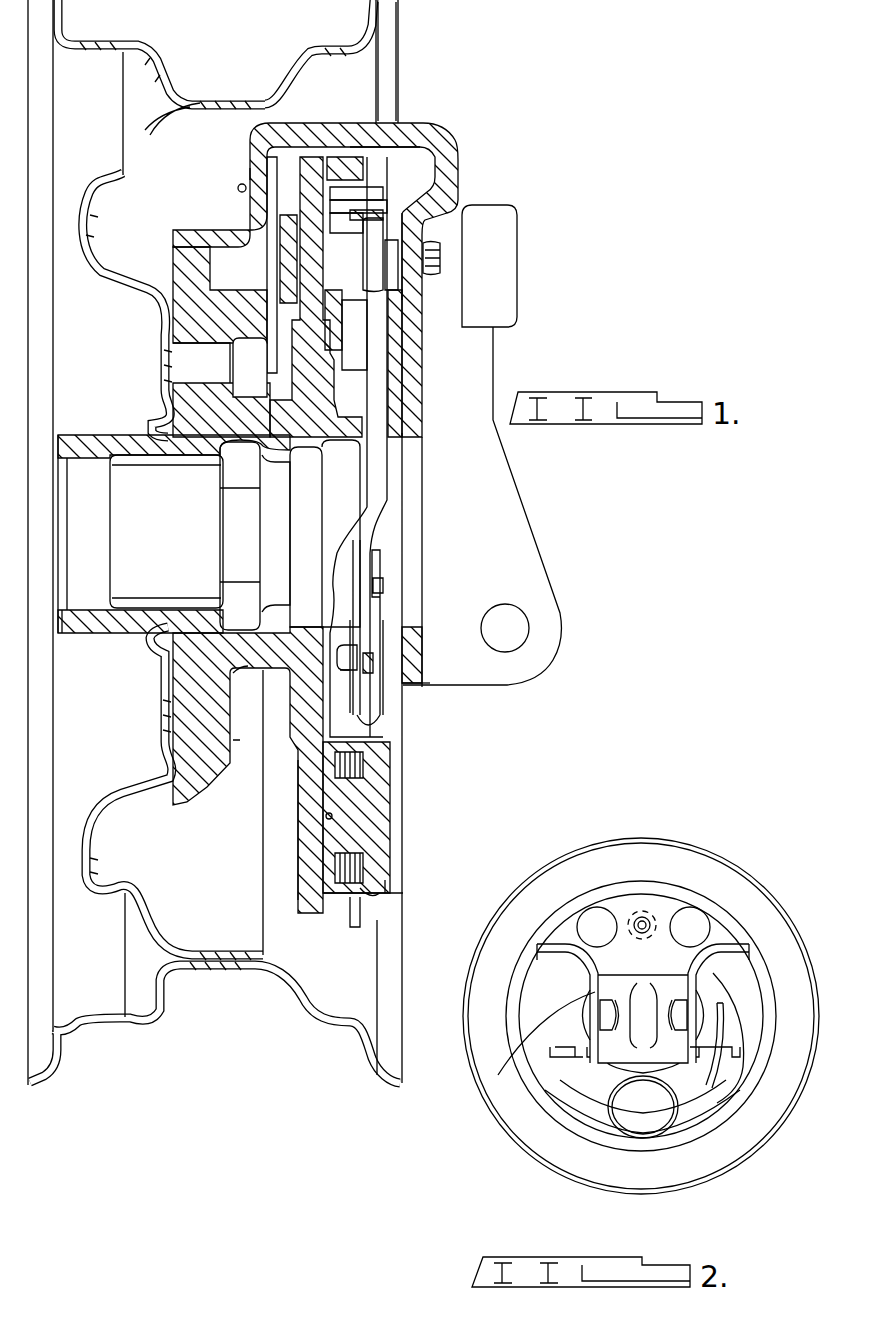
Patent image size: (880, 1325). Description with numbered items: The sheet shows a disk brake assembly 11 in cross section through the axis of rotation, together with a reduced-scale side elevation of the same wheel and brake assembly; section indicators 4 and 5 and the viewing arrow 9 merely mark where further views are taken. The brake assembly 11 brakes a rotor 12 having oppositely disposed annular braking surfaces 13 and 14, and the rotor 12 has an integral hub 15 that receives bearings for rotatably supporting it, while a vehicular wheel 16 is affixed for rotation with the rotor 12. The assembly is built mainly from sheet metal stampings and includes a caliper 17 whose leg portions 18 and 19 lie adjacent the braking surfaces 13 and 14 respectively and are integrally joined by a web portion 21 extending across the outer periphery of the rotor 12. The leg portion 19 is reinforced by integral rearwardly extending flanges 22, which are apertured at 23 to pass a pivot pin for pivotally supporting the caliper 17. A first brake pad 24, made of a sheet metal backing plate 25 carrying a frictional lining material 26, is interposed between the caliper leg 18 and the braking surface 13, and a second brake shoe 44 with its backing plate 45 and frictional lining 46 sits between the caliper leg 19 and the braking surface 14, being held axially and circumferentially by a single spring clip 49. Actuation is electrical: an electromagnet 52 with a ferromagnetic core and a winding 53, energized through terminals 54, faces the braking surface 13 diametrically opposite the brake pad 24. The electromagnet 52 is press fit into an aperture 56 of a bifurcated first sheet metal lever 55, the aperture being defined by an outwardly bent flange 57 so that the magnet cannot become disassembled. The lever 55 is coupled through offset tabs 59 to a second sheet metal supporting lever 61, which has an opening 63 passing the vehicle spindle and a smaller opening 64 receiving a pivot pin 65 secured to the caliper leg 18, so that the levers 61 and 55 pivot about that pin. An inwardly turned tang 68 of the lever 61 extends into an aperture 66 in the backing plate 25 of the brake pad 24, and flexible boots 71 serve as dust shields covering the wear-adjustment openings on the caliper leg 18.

In FIG. 2, the section line 4- 4 is at (603, 947).
In FIG. 1, the section line 5 is at (357, 112).
In FIG. 1, the direction arrow 9 is at (546, 272).
In FIG. 1, the disk brake assembly 11 is at (478, 140).
In FIG. 2, the disk brake assembly 11 is at (732, 855).
In FIG. 1, the rotor 12 is at (300, 852).
In FIG. 1, the braking surface 13 is at (326, 816).
In FIG. 1, the braking surface 14 is at (300, 790).
In FIG. 1, the hub 15 is at (188, 660).
In FIG. 1, the vehicular wheel 16 is at (108, 268).
In FIG. 2, the vehicular wheel 16 is at (665, 860).
In FIG. 1, the caliper 17 is at (440, 122).
In FIG. 1, the leg portion 18 is at (440, 248).
In FIG. 1, the leg portion 19 is at (252, 170).
In FIG. 1, the web portion 21 is at (366, 128).
In FIG. 1, the flanges 22 is at (487, 356).
In FIG. 2, the flanges 22 is at (575, 985).
In FIG. 1, the aperture 23 is at (518, 642).
In FIG. 1, the first brake pad 24 is at (370, 160).
In FIG. 1, the backing plate 25 is at (345, 190).
In FIG. 1, the frictional lining material 26 is at (336, 160).
In FIG. 1, the second brake shoe 44 is at (280, 150).
In FIG. 1, the backing plate 45 is at (278, 292).
In FIG. 1, the frictional lining 46 is at (278, 263).
In FIG. 1, the spring clip 49 is at (238, 188).
In FIG. 1, the electromagnet 52 is at (377, 790).
In FIG. 2, the electromagnet 52 is at (630, 1120).
In FIG. 1, the winding 53 is at (366, 766).
In FIG. 1, the terminals 54 is at (382, 620).
In FIG. 2, the terminals 54 is at (712, 1072).
In FIG. 1, the first sheet metal lever 55 is at (372, 690).
In FIG. 2, the first sheet metal lever 55 is at (540, 1108).
In FIG. 1, the aperture 56 is at (387, 884).
In FIG. 1, the flange 57 is at (385, 906).
In FIG. 1, the offset tabs 59 is at (342, 652).
In FIG. 1, the second sheet metal supporting lever 61 is at (395, 395).
In FIG. 2, the second sheet metal supporting lever 61 is at (748, 966).
In FIG. 1, the opening 63 is at (392, 425).
In FIG. 2, the opening 63 is at (595, 1027).
In FIG. 1, the opening 64 is at (440, 262).
In FIG. 1, the pivot pin 65 is at (398, 285).
In FIG. 1, the aperture 66 is at (375, 212).
In FIG. 1, the tang 68 is at (352, 200).
In FIG. 1, the flexible boots 71 is at (500, 205).
In FIG. 2, the flexible boots 71 is at (566, 937).